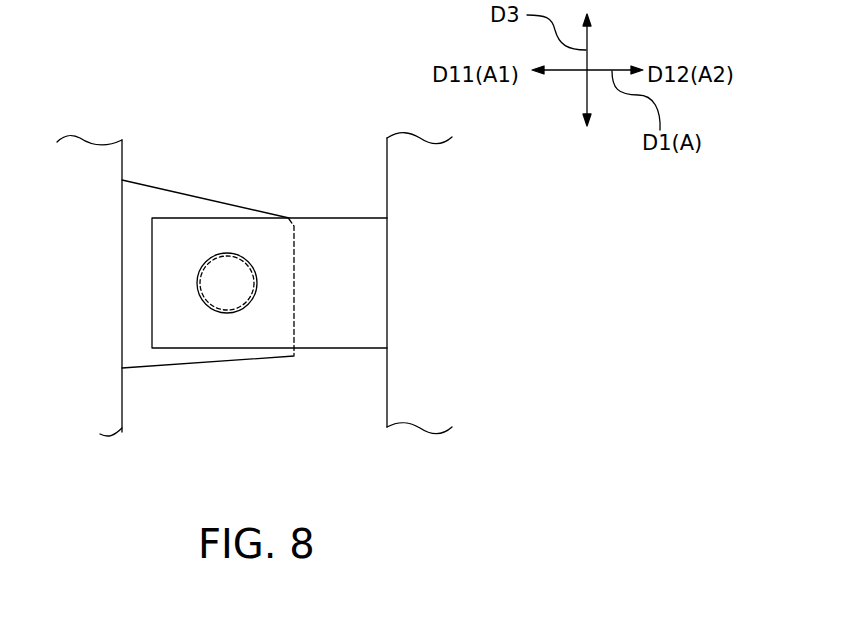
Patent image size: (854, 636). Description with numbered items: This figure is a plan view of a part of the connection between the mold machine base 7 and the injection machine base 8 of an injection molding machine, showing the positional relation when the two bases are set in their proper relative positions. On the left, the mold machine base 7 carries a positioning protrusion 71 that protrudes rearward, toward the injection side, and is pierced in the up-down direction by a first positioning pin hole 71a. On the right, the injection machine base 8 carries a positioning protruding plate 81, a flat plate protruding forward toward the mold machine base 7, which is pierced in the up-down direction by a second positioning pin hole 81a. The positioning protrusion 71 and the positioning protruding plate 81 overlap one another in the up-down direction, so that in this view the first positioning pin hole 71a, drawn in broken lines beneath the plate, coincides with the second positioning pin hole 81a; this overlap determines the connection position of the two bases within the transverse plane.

The mold machine base 7 is at (122, 402).
The injection machine base 8 is at (387, 405).
The positioning protrusion 71 is at (164, 190).
The first positioning pin hole 71a is at (227, 312).
The positioning protruding plate 81 is at (332, 218).
The second positioning pin hole 81a is at (224, 253).